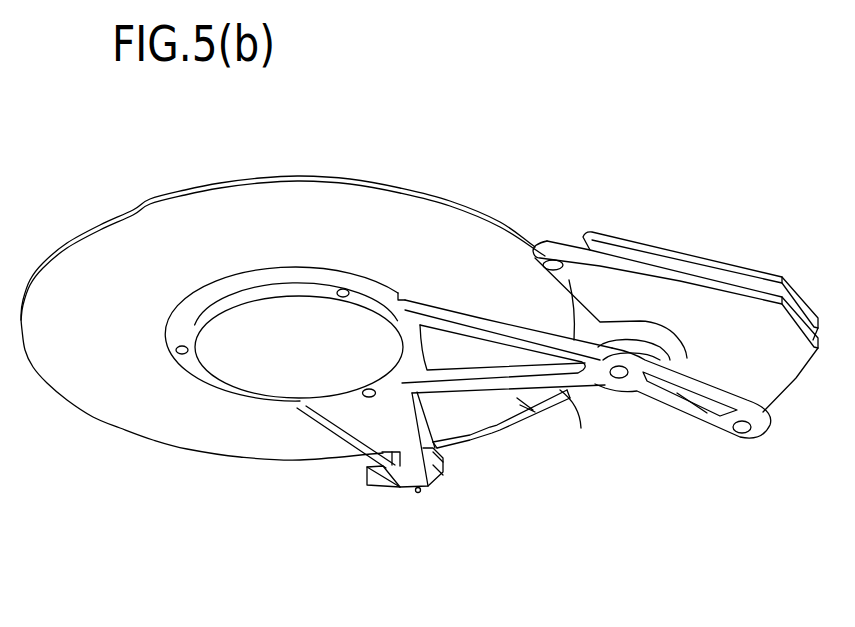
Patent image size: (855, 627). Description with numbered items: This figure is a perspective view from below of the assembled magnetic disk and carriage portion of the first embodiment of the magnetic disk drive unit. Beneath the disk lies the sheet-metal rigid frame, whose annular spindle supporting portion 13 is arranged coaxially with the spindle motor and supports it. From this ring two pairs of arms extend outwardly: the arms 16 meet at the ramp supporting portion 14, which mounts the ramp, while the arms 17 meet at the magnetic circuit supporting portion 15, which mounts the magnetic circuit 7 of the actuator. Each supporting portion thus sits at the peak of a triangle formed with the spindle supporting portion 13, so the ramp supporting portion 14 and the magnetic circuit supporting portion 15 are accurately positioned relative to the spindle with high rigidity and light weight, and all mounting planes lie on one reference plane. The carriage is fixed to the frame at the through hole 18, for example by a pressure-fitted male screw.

The magnetic circuit 7 is at (763, 337).
The spindle supporting portion 13 is at (195, 372).
The ramp supporting portion 14 is at (407, 493).
The magnetic circuit supporting portion 15 is at (700, 423).
The arms 16 is at (312, 432).
The arms 17 is at (472, 388).
The through hole 18 is at (618, 378).